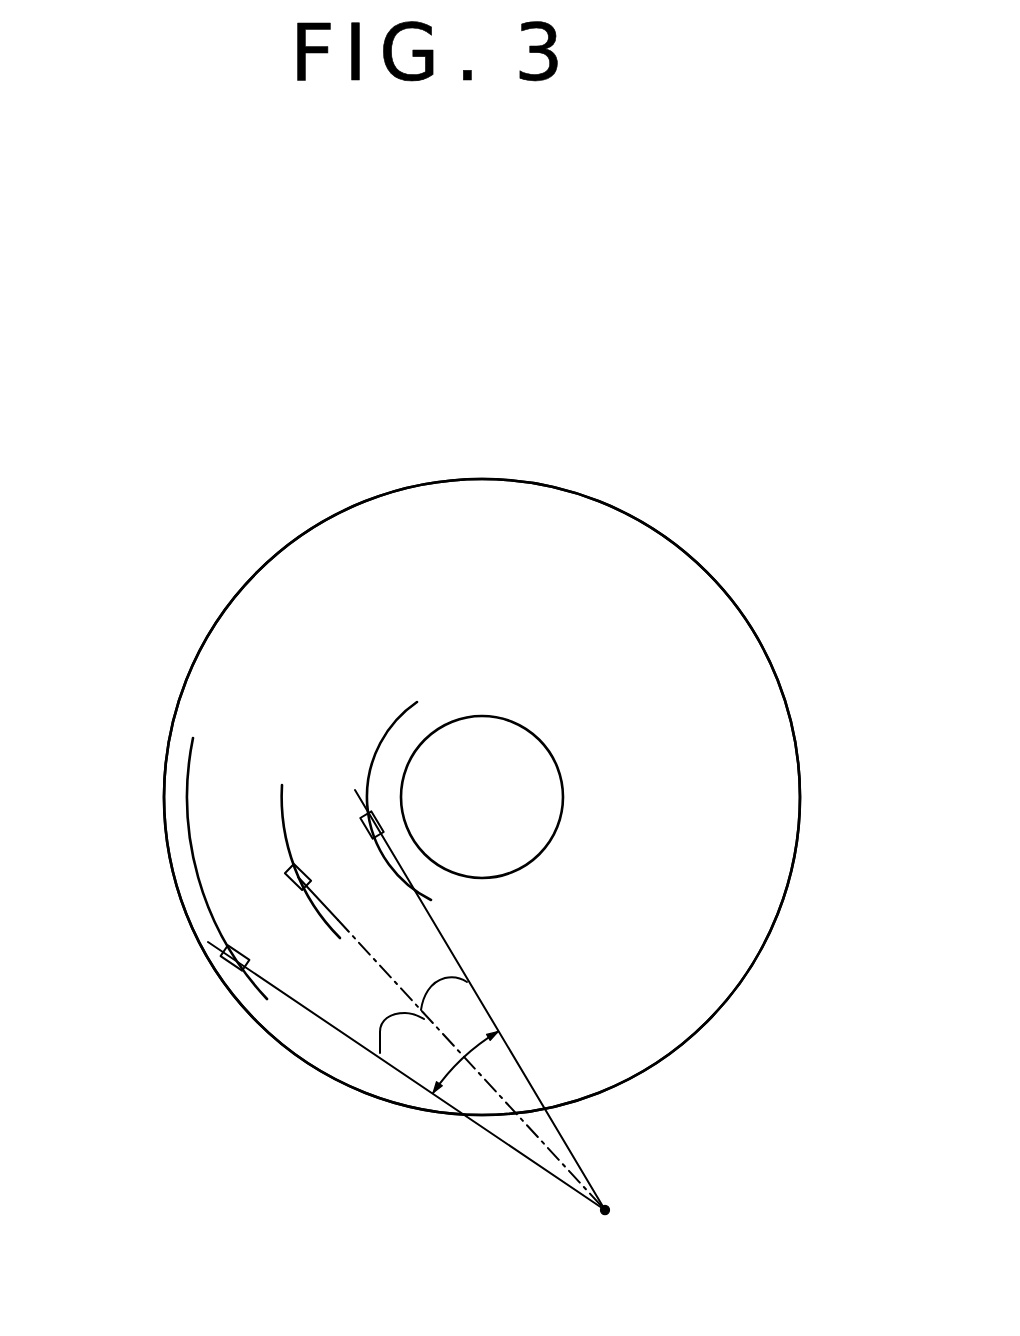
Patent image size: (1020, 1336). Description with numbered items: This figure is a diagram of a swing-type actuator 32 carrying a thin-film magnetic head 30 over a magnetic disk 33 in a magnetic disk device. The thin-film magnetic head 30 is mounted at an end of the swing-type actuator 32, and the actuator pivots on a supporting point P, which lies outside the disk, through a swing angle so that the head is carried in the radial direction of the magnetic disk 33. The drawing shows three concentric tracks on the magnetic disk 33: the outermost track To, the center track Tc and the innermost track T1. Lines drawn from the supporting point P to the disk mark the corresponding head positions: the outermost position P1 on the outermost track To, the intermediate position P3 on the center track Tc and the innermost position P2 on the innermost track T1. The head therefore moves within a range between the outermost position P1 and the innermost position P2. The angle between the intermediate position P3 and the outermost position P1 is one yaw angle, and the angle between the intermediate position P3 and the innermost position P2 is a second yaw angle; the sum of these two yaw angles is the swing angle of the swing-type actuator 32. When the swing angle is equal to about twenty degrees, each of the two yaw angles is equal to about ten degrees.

The thin-film magnetic head 30 is at (234, 967).
The swing-type actuator 32 is at (317, 1023).
The magnetic disk 33 is at (778, 719).
The supporting point P is at (610, 1207).
The outermost position P1 is at (221, 948).
The innermost position P2 is at (360, 792).
The intermediate position P3 is at (293, 871).
The outermost track To is at (192, 773).
The center track Tc is at (282, 824).
The innermost track T1 is at (386, 736).